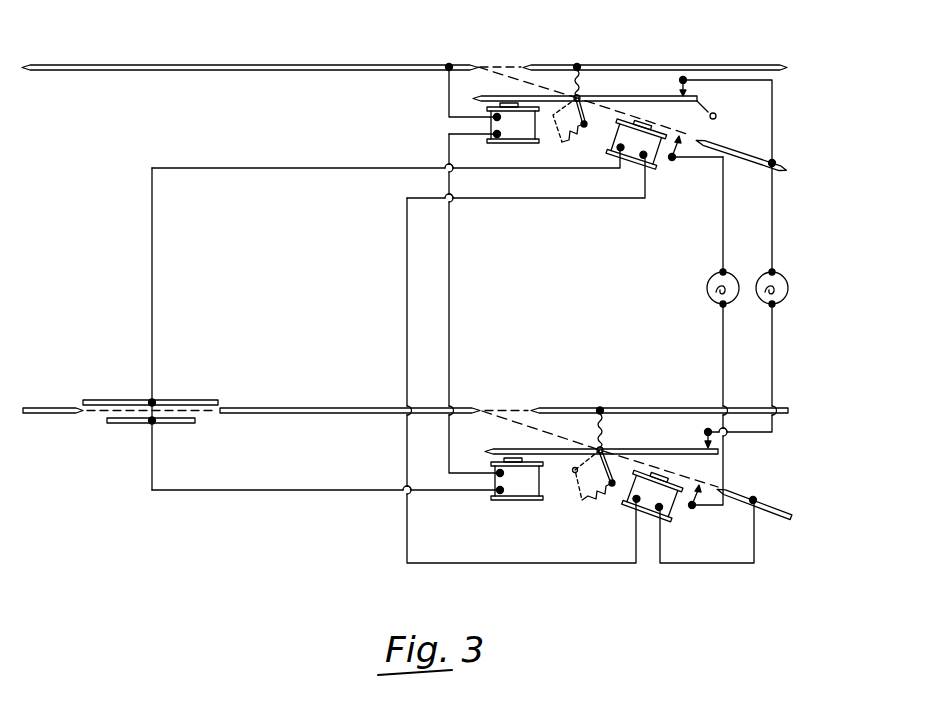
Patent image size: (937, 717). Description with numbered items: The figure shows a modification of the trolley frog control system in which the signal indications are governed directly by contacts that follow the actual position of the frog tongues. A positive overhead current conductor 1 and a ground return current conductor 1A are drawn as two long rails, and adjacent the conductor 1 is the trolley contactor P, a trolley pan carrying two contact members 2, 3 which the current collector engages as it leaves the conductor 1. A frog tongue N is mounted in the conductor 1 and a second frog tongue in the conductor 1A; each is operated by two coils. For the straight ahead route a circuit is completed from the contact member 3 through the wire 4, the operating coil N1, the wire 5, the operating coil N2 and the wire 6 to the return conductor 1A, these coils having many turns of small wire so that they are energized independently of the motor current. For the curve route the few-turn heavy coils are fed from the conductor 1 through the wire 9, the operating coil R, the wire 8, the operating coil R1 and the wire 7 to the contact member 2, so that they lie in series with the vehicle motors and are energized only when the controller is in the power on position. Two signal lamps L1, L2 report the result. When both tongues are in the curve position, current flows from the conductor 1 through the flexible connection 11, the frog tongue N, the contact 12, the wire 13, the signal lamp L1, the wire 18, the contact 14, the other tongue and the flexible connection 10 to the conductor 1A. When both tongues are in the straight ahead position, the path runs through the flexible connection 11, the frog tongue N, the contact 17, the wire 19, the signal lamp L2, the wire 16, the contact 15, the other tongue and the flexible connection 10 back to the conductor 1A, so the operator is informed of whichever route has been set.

The current conductor 1 is at (327, 408).
The ground return current conductor 1A is at (400, 64).
The contact member 2 is at (187, 397).
The contact member 3 is at (168, 427).
The wire 4 is at (330, 497).
The wire 5 is at (458, 358).
The wire 6 is at (445, 95).
The wire 7 is at (153, 312).
The wire 8 is at (582, 203).
The wire 9 is at (712, 567).
The flexible connection 10 is at (582, 82).
The flexible connection 11 is at (605, 433).
The contact 12 is at (705, 507).
The wire 13 is at (727, 505).
The contact 14 is at (683, 157).
The contact 15 is at (690, 87).
The wire 16 is at (768, 115).
The contact 17 is at (703, 433).
The wire 18 is at (720, 205).
The wire 19 is at (772, 337).
The trolley contactor P is at (150, 411).
The frog tongue N is at (685, 455).
The operating coil N1 is at (517, 479).
The operating coil N2 is at (513, 123).
The operating coil R is at (653, 493).
The operating coil R1 is at (637, 142).
The signal lamp L1 is at (718, 281).
The signal lamp L2 is at (769, 281).